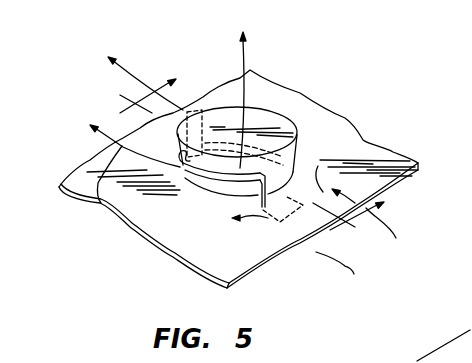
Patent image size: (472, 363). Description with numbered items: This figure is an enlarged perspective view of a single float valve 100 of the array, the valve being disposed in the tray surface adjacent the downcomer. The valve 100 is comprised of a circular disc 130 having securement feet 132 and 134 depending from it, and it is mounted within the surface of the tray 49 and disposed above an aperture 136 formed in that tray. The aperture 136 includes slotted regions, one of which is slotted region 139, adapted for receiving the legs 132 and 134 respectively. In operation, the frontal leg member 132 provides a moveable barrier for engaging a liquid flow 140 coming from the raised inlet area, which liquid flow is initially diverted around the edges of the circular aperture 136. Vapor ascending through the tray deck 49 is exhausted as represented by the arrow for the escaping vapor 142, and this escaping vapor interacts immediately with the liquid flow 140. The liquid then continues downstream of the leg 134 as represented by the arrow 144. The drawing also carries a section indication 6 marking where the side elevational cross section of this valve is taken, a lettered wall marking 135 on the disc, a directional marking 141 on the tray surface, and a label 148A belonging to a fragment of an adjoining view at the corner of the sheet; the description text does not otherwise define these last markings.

The float valve 100 is at (344, 101).
The circular disc 130 is at (274, 118).
The securement foot 132 is at (316, 157).
The securement foot 134 is at (198, 112).
The side wall 135 is at (225, 104).
The aperture 136 is at (228, 190).
The slotted region 139 is at (173, 196).
The liquid flow 140 is at (308, 242).
The fold direction 141 is at (340, 168).
The escaping vapor 142 is at (245, 52).
The downstream liquid flow 144 is at (150, 84).
The tray 49 is at (400, 161).
The section line 6- 6 is at (245, 165).
The adjacent figure element 148A is at (417, 361).